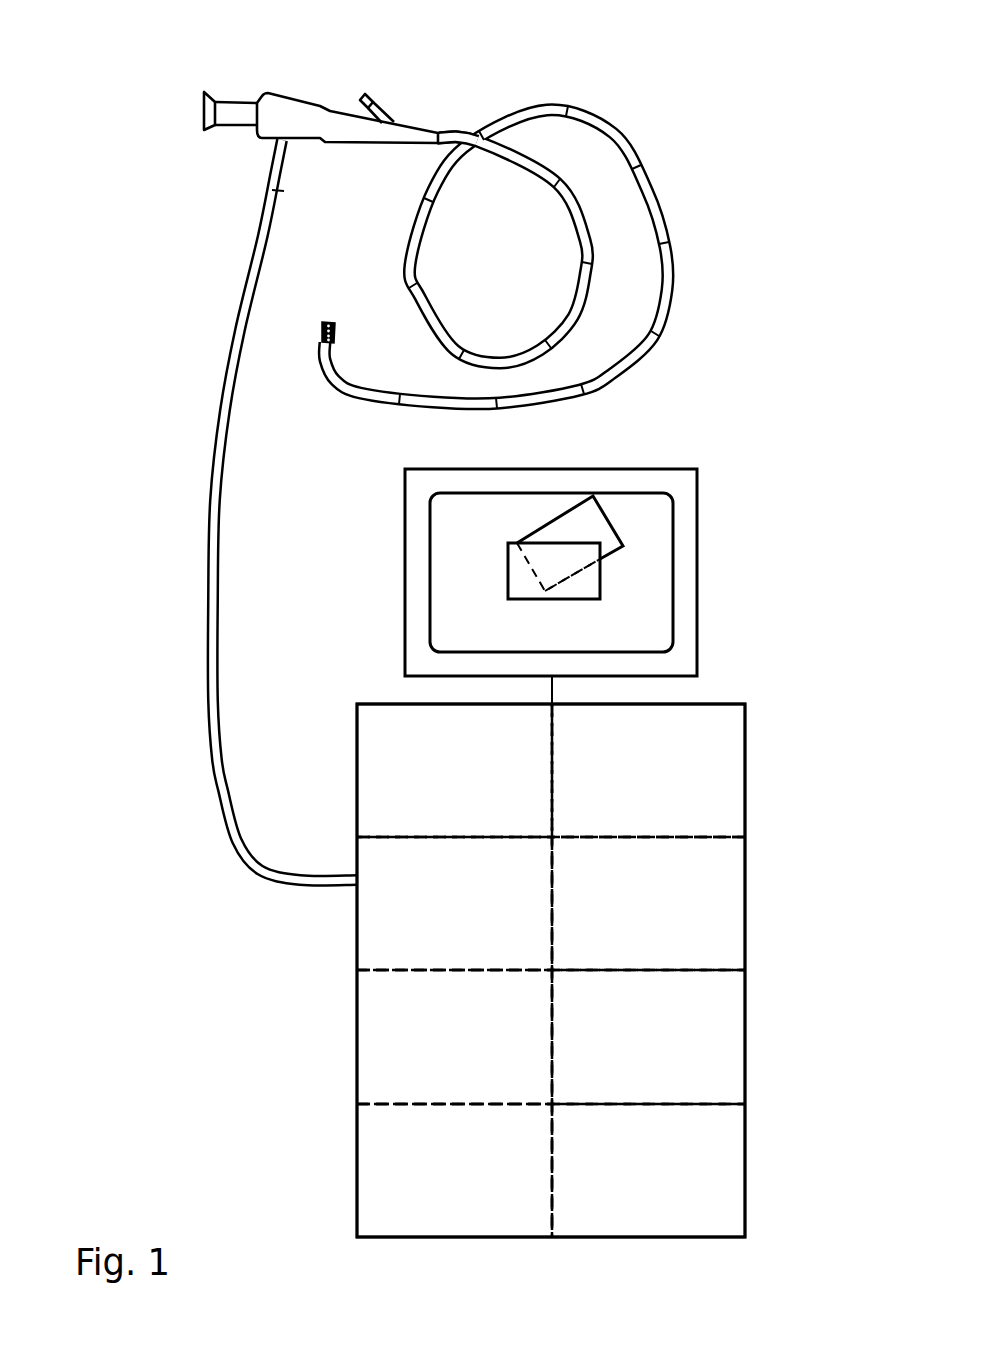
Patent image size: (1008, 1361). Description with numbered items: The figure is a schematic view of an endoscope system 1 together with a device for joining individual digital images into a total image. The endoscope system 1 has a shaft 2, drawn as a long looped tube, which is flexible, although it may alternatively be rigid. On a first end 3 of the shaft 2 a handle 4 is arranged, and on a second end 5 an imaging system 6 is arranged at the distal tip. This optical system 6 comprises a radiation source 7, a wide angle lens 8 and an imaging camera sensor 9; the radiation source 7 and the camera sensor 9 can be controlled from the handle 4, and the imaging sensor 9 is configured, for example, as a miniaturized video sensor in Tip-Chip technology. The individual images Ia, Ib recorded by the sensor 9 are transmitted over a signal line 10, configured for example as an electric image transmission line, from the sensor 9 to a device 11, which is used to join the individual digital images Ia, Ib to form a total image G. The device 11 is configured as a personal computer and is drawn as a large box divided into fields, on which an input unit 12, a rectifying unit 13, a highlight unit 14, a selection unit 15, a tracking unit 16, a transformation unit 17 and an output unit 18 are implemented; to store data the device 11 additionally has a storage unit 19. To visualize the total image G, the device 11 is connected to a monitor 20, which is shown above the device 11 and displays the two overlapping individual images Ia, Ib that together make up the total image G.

The endoscope system 1 is at (178, 558).
The shaft 2 is at (672, 254).
The first end 3 is at (450, 131).
The handle 4 is at (319, 123).
The second end 5 is at (320, 356).
The imaging system 6 is at (316, 324).
The radiation source 7 is at (330, 321).
The wide angle lens 8 is at (322, 329).
The imaging camera sensor 9 is at (322, 336).
The signal line 10 is at (223, 778).
The device 11 is at (750, 867).
The input unit 12 is at (365, 777).
The rectifying unit 13 is at (738, 778).
The highlight unit 14 is at (365, 933).
The selection unit 15 is at (738, 933).
The tracking unit 16 is at (365, 1037).
The transformation unit 17 is at (738, 1037).
The output unit 18 is at (365, 1178).
The storage unit 19 is at (738, 1178).
The monitor 20 is at (700, 572).
The individual image Ia is at (619, 531).
The individual image Ib is at (532, 585).
The total image G is at (603, 588).